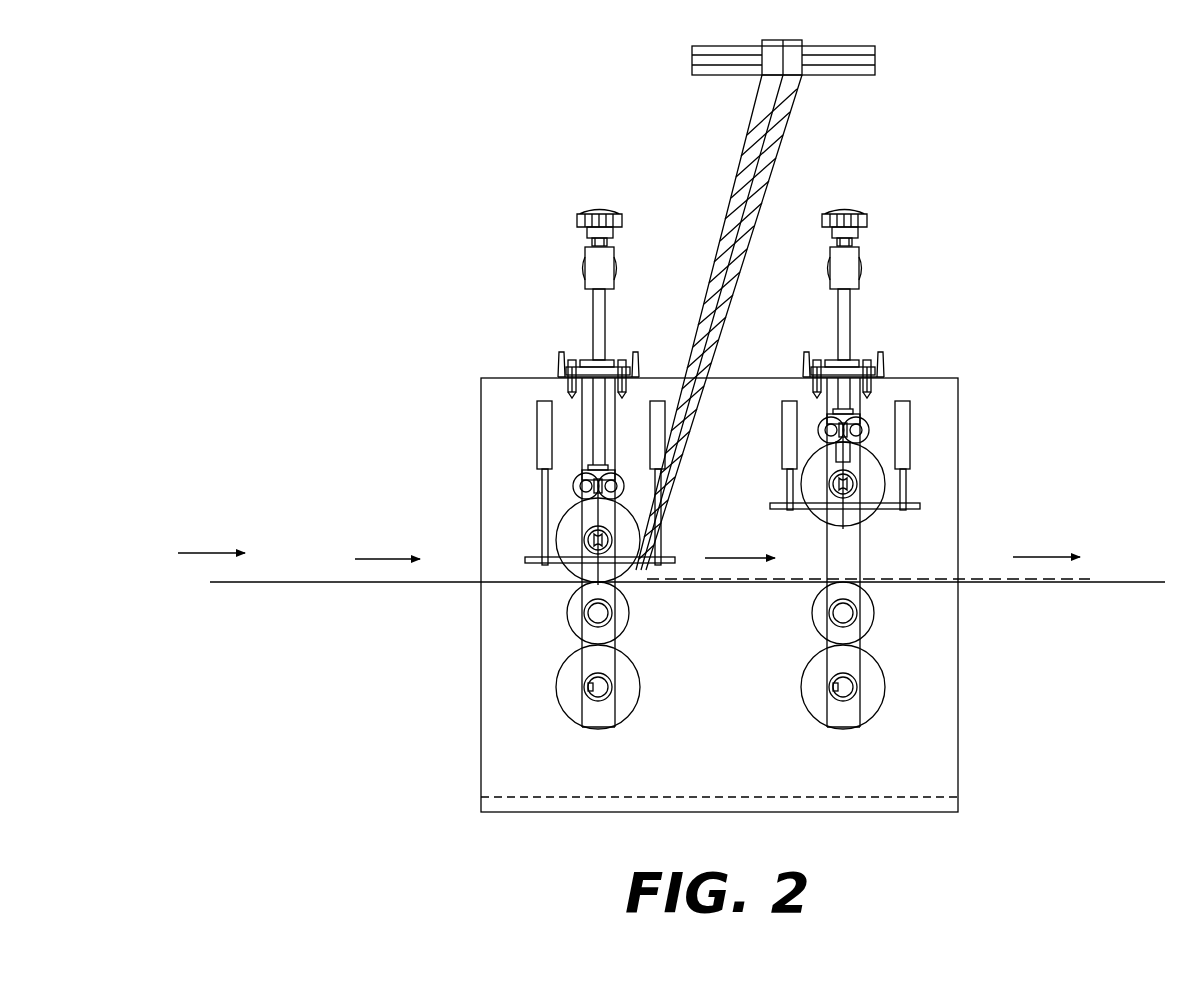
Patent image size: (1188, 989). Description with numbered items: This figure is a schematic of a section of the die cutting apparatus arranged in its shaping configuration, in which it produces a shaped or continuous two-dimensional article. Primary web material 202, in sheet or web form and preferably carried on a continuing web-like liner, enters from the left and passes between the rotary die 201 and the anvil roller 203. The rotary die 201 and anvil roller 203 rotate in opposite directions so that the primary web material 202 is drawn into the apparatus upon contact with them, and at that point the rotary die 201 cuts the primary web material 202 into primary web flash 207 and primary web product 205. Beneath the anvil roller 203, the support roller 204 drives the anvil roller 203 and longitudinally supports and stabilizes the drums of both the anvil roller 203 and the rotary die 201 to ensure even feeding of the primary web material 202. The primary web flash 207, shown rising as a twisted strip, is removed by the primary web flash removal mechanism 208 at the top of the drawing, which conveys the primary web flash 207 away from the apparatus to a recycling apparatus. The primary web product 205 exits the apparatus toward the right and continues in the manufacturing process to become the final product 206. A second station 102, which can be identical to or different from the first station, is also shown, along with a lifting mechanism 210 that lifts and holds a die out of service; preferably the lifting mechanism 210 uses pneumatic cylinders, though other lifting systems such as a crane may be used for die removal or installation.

The second station 102 is at (846, 211).
The rotary die 201 is at (556, 527).
The primary web material 202 is at (230, 583).
The anvil roller 203 is at (562, 617).
The support roller 204 is at (558, 698).
The primary web product 205 is at (663, 583).
The final product 206 is at (1113, 578).
The primary web flash 207 is at (742, 155).
The primary web flash removal mechanism 208 is at (692, 54).
The lifting mechanism 210 is at (920, 496).